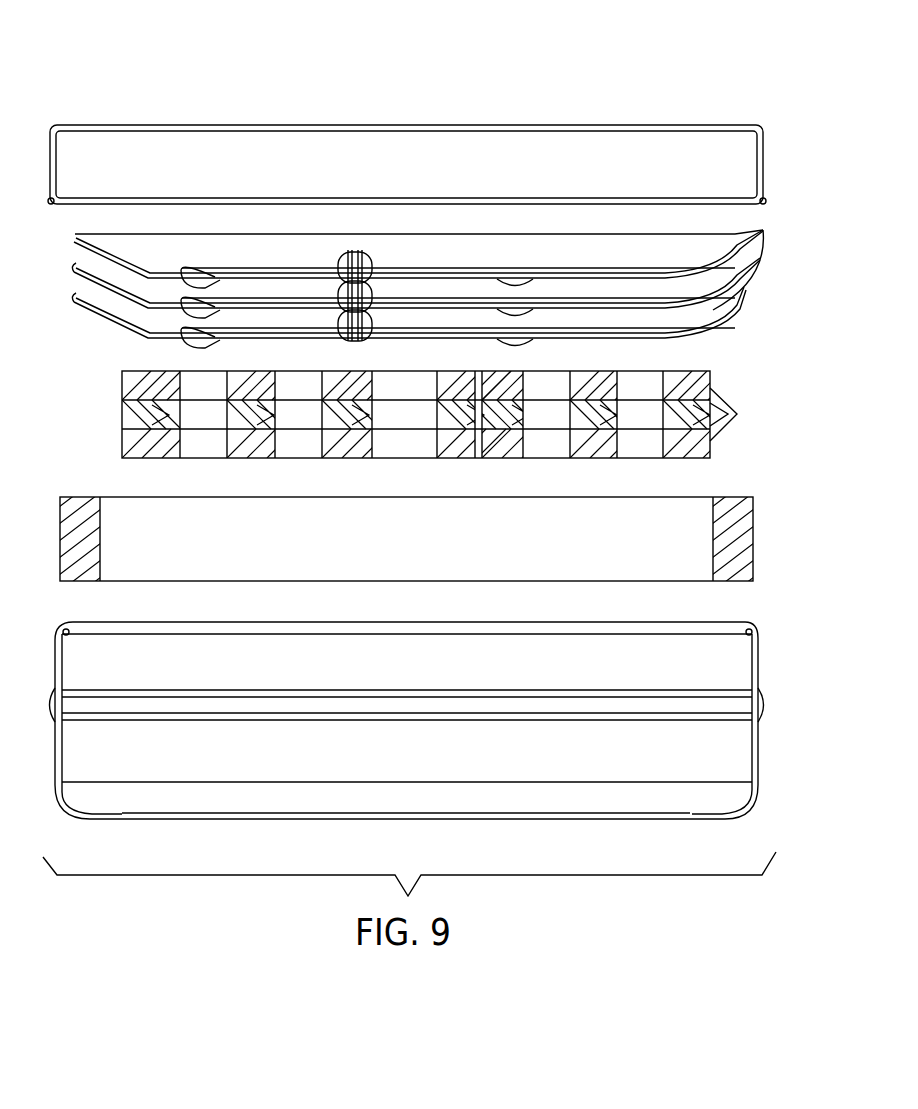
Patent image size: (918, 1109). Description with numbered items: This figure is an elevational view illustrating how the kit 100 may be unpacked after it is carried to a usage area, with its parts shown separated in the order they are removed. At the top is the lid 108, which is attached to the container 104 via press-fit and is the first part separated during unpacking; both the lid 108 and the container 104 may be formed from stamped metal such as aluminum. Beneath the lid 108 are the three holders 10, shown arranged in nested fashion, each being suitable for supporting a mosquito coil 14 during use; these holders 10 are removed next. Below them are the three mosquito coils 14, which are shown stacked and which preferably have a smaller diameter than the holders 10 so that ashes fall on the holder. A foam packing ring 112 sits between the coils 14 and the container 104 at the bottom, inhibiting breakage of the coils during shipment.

The kit 100 is at (688, 46).
The lid 108 is at (598, 157).
The holder 10 is at (763, 231).
The mosquito coil 14 is at (737, 414).
The foam packing ring 112 is at (742, 515).
The container 104 is at (713, 652).